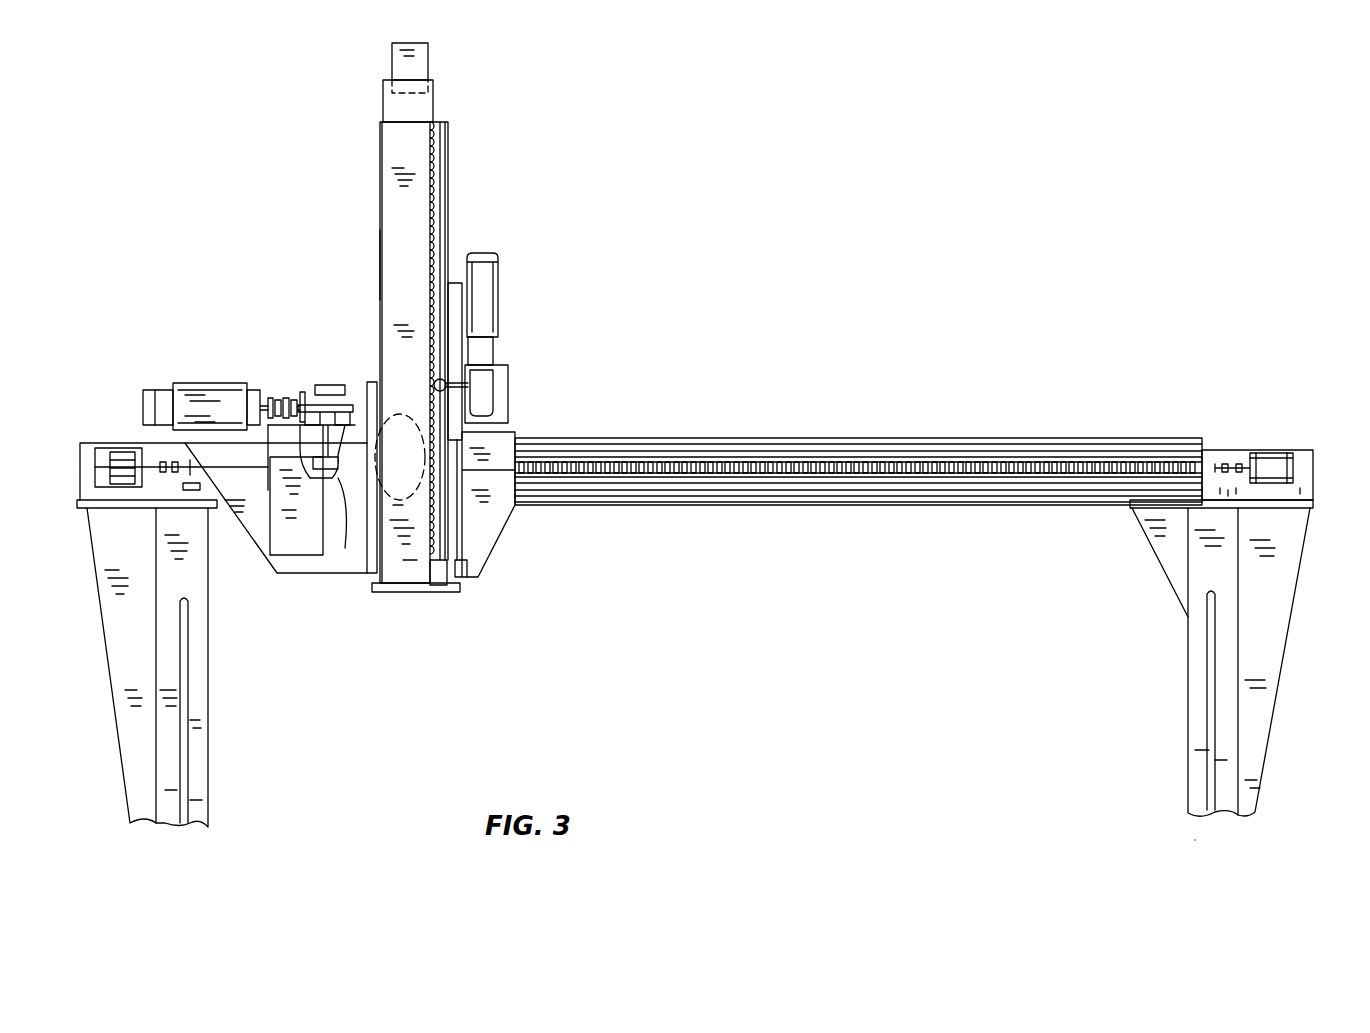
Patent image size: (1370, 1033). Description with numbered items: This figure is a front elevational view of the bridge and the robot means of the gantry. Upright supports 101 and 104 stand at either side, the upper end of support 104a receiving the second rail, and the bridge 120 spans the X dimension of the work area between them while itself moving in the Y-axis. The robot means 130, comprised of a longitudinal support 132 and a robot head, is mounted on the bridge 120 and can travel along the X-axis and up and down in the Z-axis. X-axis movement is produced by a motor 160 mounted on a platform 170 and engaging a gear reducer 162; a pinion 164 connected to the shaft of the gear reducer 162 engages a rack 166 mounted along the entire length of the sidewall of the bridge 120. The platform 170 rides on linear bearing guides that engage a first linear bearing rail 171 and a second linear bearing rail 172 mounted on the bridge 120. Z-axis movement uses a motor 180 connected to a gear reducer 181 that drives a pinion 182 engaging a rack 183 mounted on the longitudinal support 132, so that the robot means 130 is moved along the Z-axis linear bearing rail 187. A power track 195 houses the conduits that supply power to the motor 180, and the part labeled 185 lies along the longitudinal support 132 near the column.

The upright support 101 is at (1262, 703).
The upright support 104 is at (198, 665).
The upper end of support 104a is at (104, 508).
The bridge 120 is at (914, 478).
The robot means 130 is at (380, 178).
The longitudinal support 132 is at (385, 258).
The motor 160 is at (208, 396).
The gear reducer 162 is at (316, 398).
The pinion 164 is at (345, 548).
The rack 166 is at (772, 457).
The platform 170 is at (185, 443).
The first linear bearing rail 171 is at (892, 457).
The second linear bearing rail 172 is at (785, 503).
The motor 180 is at (500, 305).
The gear reducer 181 is at (492, 392).
The pinion 182 is at (446, 385).
The rack 183 is at (442, 136).
The guide 185 is at (385, 218).
The linear bearing rail 187 is at (445, 578).
The power track 195 is at (392, 60).